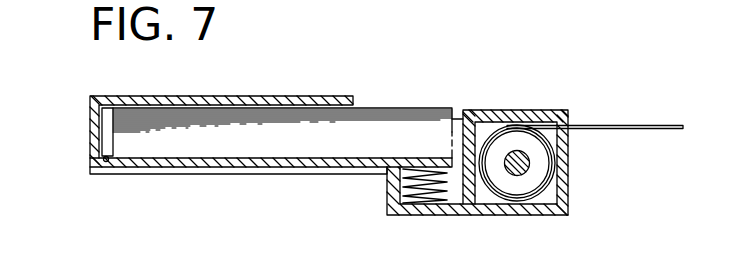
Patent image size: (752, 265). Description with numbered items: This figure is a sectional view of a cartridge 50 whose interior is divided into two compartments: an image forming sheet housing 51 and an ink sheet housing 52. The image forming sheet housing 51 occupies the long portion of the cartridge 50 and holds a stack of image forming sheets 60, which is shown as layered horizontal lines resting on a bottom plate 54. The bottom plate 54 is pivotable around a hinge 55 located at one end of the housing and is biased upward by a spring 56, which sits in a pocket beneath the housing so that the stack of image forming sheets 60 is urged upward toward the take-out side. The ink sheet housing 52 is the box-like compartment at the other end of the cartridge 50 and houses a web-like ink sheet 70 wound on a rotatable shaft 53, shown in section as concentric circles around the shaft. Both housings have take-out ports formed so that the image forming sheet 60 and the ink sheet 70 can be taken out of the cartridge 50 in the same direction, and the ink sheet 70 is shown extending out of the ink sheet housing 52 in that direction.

The cartridge 50 is at (283, 95).
The image forming sheet housing 51 is at (104, 145).
The ink sheet housing 52 is at (547, 196).
The rotatable shaft 53 is at (514, 166).
The bottom plate 54 is at (184, 168).
The hinge 55 is at (106, 163).
The spring 56 is at (424, 200).
The image forming sheet 60 is at (402, 111).
The ink sheet 70 is at (606, 126).